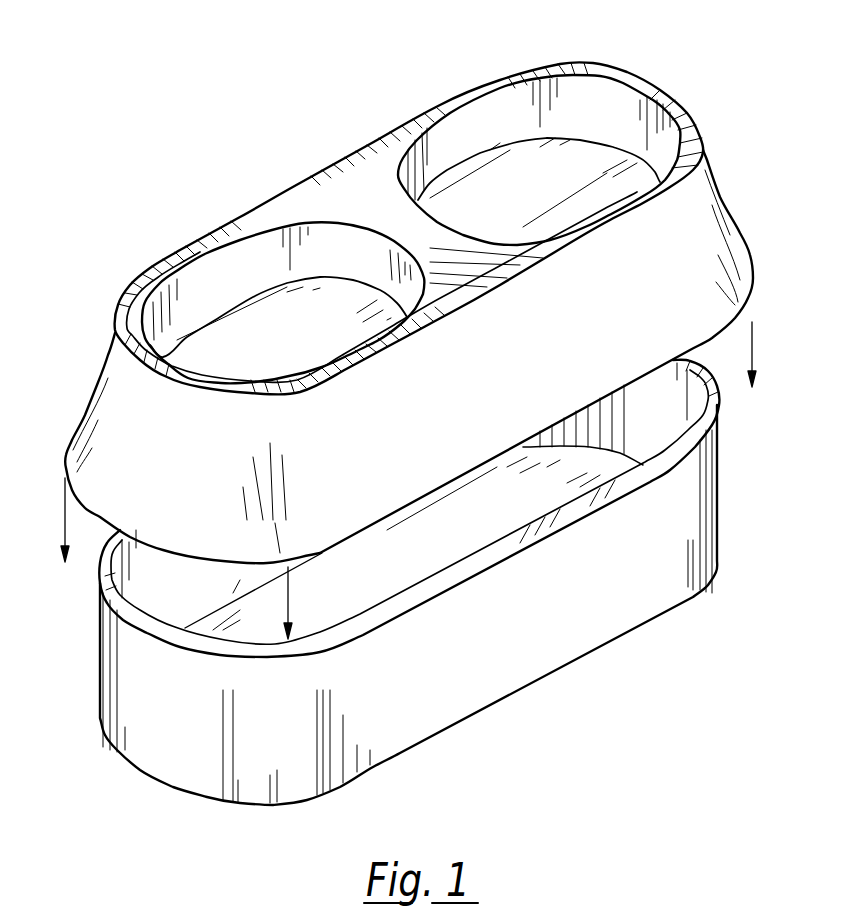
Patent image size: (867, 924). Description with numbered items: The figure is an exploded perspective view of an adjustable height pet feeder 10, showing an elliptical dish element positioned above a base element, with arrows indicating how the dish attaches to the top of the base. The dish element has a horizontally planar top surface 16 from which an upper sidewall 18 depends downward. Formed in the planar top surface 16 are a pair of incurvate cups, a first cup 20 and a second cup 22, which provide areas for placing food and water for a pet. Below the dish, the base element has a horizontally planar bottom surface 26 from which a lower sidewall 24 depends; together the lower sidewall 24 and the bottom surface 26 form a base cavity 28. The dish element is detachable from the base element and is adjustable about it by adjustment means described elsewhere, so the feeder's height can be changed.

The adjustable height pet feeder 10 is at (223, 137).
The top surface 16 is at (375, 160).
The upper sidewall 18 is at (730, 241).
The first cup 20 is at (217, 323).
The second cup 22 is at (595, 150).
The lower sidewall 24 is at (722, 520).
The bottom surface 26 is at (517, 693).
The base cavity 28 is at (147, 587).